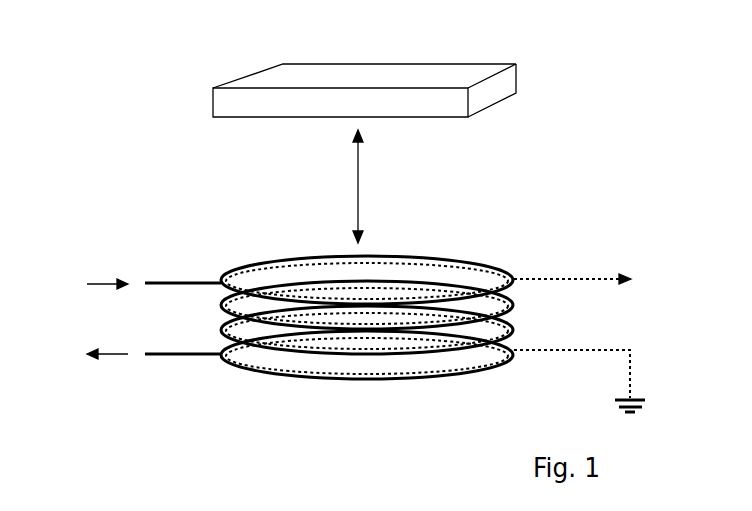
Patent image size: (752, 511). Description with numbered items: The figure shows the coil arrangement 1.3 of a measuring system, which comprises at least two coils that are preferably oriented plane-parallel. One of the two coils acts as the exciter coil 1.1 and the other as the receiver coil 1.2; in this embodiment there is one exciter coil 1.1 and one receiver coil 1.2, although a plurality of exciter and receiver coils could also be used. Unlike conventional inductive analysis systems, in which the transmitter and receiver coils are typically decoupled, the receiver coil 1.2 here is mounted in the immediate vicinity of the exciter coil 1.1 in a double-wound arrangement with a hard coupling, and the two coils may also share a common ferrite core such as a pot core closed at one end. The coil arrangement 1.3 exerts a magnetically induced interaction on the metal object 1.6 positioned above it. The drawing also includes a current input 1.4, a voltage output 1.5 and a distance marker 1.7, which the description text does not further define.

The exciter coil 1.1 is at (241, 266).
The receiver coil 1.2 is at (400, 362).
The coil arrangement 1.3 is at (366, 304).
The current input leads 1.4 is at (75, 315).
The voltage output 1.5 is at (642, 308).
The metal object 1.6 is at (318, 75).
The distance between coil and plate 1.7 is at (353, 181).